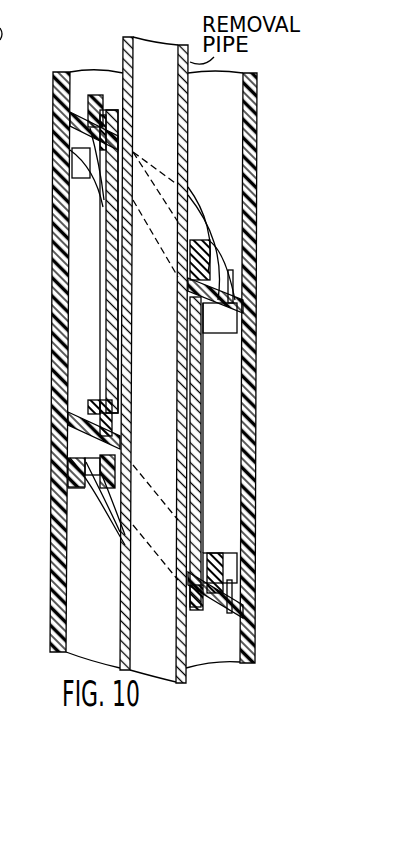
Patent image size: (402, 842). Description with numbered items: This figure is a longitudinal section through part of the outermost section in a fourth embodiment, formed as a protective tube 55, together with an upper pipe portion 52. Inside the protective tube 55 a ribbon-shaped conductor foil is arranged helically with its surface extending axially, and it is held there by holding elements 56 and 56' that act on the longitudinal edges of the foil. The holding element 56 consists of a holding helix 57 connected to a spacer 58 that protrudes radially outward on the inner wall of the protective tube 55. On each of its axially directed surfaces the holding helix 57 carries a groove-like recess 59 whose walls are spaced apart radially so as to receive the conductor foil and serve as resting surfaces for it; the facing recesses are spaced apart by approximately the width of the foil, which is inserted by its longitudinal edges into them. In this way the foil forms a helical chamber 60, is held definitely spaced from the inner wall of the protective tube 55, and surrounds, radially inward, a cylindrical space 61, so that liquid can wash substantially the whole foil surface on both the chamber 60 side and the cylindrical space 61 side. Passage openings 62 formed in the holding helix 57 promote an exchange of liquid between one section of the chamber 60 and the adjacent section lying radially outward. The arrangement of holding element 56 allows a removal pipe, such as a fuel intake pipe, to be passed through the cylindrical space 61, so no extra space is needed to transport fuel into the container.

The upper pipe section 52 is at (0, 10).
The protective tube 55 is at (61, 258).
The holding element 56' is at (60, 136).
The helical chamber 60 is at (75, 210).
The cylindrical space 61 is at (132, 328).
The spacer 58 is at (80, 426).
The holding element 56 is at (63, 485).
The holding helix 57 is at (68, 500).
The groove-like recess 59 is at (113, 490).
The passage opening 62 is at (225, 575).